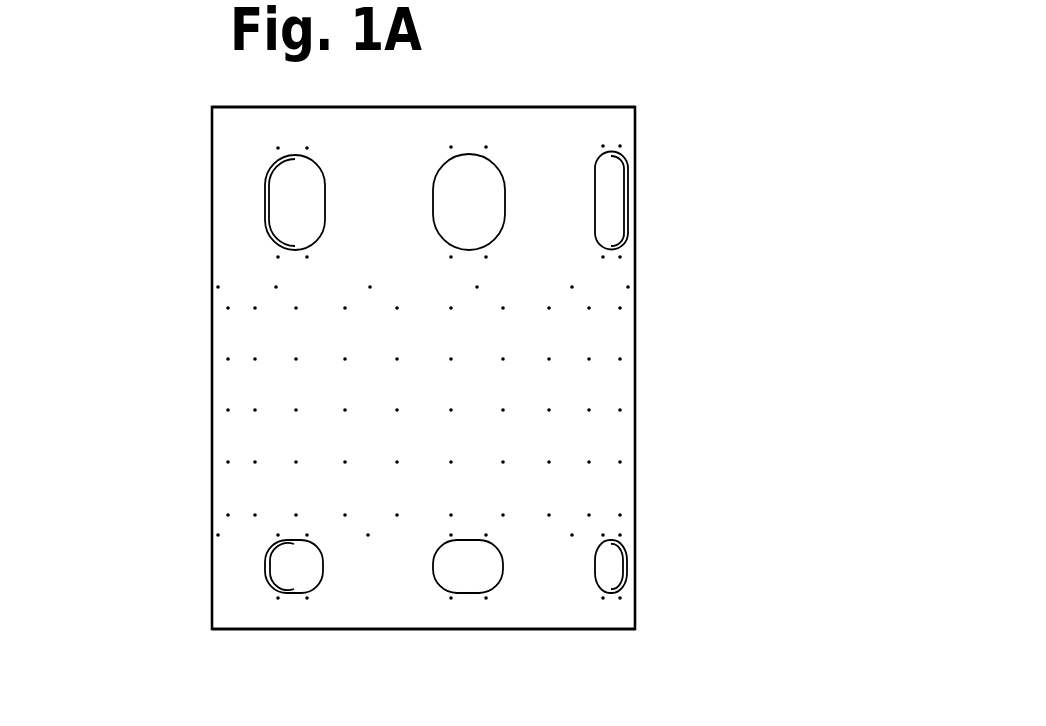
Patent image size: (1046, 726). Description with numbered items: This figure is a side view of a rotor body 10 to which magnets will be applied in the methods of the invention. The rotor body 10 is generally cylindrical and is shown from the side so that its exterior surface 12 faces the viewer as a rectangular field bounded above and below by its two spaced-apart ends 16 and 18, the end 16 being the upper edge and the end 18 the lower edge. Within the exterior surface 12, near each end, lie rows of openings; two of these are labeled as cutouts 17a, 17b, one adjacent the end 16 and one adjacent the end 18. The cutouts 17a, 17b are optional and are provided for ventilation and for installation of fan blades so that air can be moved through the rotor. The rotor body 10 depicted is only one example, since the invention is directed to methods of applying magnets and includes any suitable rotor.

The rotor body 10 is at (200, 242).
The exterior surface 12 is at (245, 488).
The end 16 is at (582, 107).
The cutout 17a is at (434, 193).
The cutout 17b is at (482, 568).
The end 18 is at (547, 629).